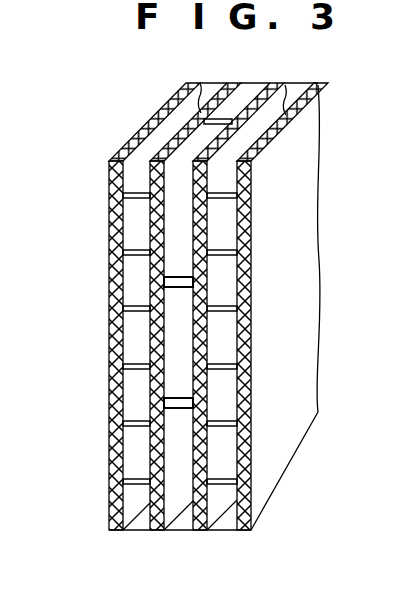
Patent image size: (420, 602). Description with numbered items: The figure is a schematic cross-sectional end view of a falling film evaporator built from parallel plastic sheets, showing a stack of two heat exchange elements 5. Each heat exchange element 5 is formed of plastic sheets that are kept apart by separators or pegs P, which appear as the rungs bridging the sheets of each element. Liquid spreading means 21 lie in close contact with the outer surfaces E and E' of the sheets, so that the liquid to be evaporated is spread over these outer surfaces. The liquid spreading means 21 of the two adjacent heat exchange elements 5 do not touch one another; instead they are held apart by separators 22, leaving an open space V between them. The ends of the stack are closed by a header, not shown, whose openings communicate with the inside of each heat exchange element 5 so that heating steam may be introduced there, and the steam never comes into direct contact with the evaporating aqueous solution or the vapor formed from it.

The liquid spreading means 21 is at (128, 157).
The separators 22 is at (176, 398).
The separators or pegs P is at (221, 248).
The heat exchange elements 5 is at (145, 535).
The outer surface E is at (259, 311).
The outer surface E' is at (180, 552).
The open space V is at (177, 510).